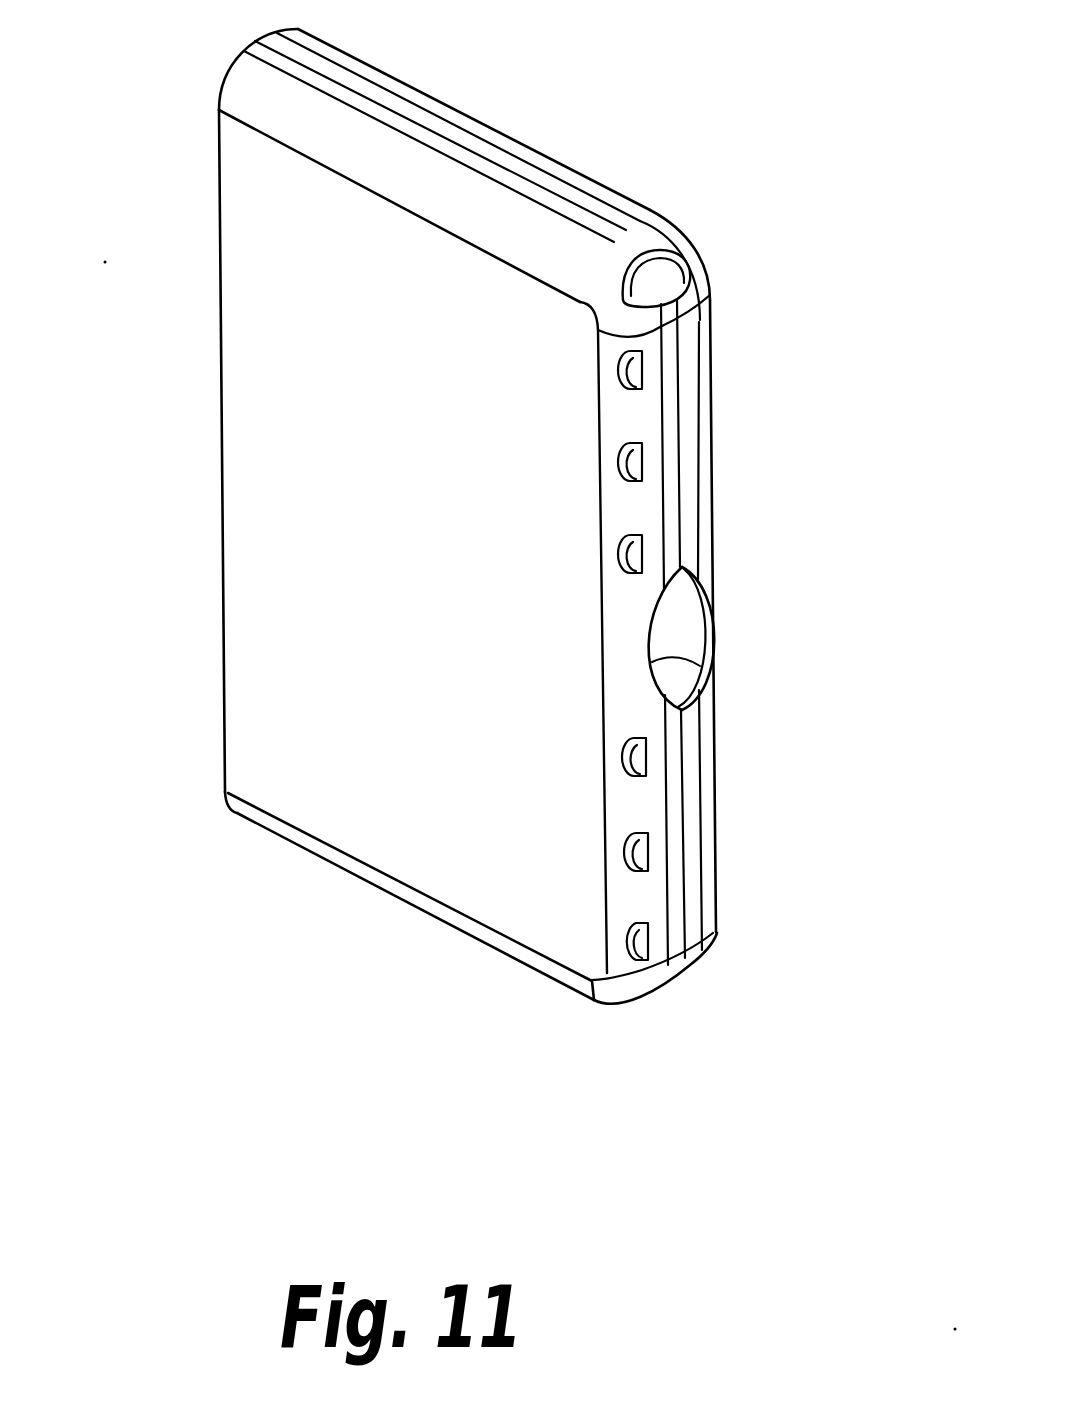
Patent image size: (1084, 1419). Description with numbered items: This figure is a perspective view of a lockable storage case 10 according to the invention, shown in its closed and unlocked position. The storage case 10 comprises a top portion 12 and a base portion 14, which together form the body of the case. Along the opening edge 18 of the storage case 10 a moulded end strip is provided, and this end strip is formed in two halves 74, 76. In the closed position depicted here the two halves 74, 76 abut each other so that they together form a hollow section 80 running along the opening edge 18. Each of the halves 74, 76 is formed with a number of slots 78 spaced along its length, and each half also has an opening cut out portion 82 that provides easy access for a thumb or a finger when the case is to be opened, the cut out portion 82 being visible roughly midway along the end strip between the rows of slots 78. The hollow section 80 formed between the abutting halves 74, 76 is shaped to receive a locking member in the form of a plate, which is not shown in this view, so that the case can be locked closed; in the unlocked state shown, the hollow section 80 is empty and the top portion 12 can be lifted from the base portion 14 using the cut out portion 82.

The storage case 10 is at (360, 889).
The top portion 12 is at (508, 922).
The base portion 14 is at (717, 932).
The opening edge 18 is at (680, 370).
The end strip half 74 is at (702, 505).
The end strip half 76 is at (620, 620).
The slots 78 is at (642, 957).
The hollow section 80 is at (637, 290).
The opening cut out portion 82 is at (712, 637).